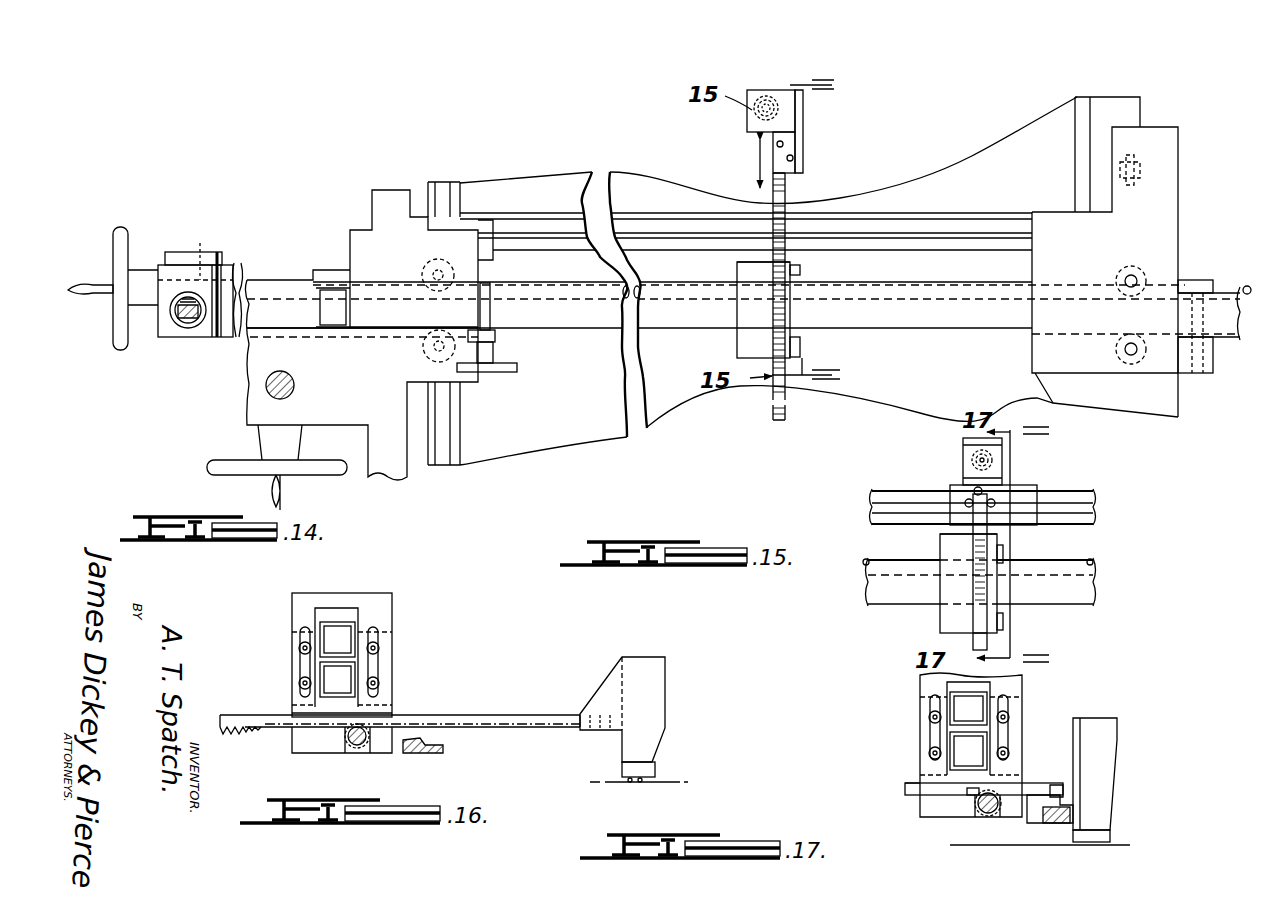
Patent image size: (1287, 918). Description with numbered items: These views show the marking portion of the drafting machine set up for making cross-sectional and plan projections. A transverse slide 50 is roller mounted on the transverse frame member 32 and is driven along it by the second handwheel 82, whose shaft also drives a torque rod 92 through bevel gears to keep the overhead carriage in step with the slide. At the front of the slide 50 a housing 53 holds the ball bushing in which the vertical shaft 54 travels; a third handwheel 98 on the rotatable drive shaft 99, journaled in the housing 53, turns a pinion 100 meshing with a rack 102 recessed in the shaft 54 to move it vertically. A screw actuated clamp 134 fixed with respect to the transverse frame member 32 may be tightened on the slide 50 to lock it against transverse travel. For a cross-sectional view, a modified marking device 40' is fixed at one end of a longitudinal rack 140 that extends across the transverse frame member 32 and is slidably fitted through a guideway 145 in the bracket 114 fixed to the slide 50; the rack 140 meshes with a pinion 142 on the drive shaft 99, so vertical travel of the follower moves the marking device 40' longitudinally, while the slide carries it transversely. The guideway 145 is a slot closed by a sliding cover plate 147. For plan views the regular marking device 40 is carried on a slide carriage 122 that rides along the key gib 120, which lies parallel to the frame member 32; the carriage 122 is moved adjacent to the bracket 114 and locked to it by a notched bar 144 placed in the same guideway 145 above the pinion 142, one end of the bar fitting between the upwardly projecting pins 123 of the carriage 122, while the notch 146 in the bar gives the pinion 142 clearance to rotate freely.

In FIG. 16, the transverse frame member 32 is at (355, 674).
In FIG. 17, the transverse frame member 32 is at (960, 740).
In FIG. 15, the marking device 40 is at (947, 457).
In FIG. 17, the marking device 40 is at (1049, 765).
In FIG. 14, the modified marking device 40' is at (739, 139).
In FIG. 16, the modified marking device 40' is at (661, 719).
In FIG. 16, the transverse slide 50 is at (325, 620).
In FIG. 14, the housing 53 is at (208, 275).
In FIG. 14, the vertical shaft 54 is at (193, 318).
In FIG. 14, the second handwheel 82 is at (212, 472).
In FIG. 14, the torque rod 92 is at (296, 383).
In FIG. 14, the third handwheel 98 is at (120, 346).
In FIG. 14, the drive shaft 99 is at (905, 292).
In FIG. 16, the drive shaft 99 is at (350, 746).
In FIG. 17, the drive shaft 99 is at (984, 814).
In FIG. 14, the pinion 100 is at (207, 228).
In FIG. 14, the rack 102 is at (176, 300).
In FIG. 14, the bracket 114 is at (735, 343).
In FIG. 15, the bracket 114 is at (942, 612).
In FIG. 16, the bracket 114 is at (392, 615).
In FIG. 17, the bracket 114 is at (1022, 694).
In FIG. 14, the key gib 120 is at (936, 212).
In FIG. 15, the key gib 120 is at (1078, 500).
In FIG. 16, the key gib 120 is at (443, 752).
In FIG. 17, the key gib 120 is at (1080, 821).
In FIG. 15, the slide carriage 122 is at (1035, 487).
In FIG. 17, the slide carriage 122 is at (1085, 801).
In FIG. 15, the pins 123 is at (973, 492).
In FIG. 14, the screw actuated clamp 134 is at (517, 368).
In FIG. 14, the rack 140 is at (790, 182).
In FIG. 16, the rack 140 is at (432, 715).
In FIG. 16, the pinion 142 is at (366, 748).
In FIG. 17, the pinion 142 is at (975, 806).
In FIG. 15, the notched bar 144 is at (973, 643).
In FIG. 17, the notched bar 144 is at (1030, 782).
In FIG. 16, the guideway 145 is at (290, 716).
In FIG. 17, the guideway 145 is at (915, 790).
In FIG. 17, the notch 146 is at (967, 796).
In FIG. 14, the cover plate 147 is at (790, 293).
In FIG. 15, the cover plate 147 is at (990, 560).
In FIG. 16, the cover plate 147 is at (390, 598).
In FIG. 17, the cover plate 147 is at (920, 684).